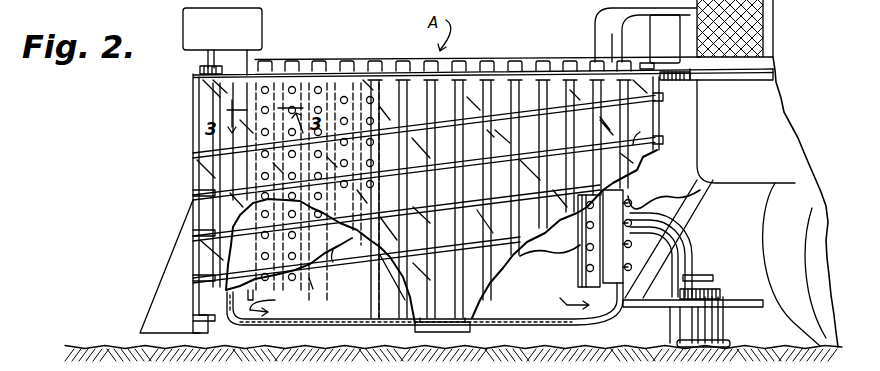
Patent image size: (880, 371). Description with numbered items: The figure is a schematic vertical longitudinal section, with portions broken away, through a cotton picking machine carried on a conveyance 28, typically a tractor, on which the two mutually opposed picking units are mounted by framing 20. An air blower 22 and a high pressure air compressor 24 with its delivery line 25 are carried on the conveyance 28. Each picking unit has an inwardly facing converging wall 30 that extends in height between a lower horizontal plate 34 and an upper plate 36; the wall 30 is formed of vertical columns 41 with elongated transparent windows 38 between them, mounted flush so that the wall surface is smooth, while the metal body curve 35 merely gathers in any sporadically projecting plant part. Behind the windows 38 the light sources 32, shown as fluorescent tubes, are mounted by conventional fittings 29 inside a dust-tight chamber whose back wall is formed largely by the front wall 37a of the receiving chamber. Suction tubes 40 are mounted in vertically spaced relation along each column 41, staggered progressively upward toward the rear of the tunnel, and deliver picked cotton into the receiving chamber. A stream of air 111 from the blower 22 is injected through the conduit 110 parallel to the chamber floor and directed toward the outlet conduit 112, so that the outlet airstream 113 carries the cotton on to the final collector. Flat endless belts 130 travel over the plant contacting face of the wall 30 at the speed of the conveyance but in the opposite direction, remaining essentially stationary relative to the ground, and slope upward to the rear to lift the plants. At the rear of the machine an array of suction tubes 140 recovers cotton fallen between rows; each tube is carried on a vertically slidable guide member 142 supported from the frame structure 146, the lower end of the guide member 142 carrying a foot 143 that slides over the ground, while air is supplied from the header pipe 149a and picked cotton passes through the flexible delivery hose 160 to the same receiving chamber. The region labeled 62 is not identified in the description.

The framing 20 is at (205, 70).
The air blower 22 is at (230, 40).
The high pressure air compressor 24 is at (674, 44).
The delivery line 25 is at (462, 62).
The conveyance 28 is at (787, 131).
The fittings 29 is at (357, 77).
The converging wall 30 is at (472, 199).
The light source 32 is at (390, 95).
The lower horizontal plate 34 is at (437, 333).
The metal body curve 35 is at (182, 262).
The upper plate 36 is at (212, 82).
The front wall of receiving chamber 37a is at (323, 291).
The window 38 is at (290, 80).
The suction tube 40 is at (256, 160).
The column 41 is at (333, 252).
The plate 62 is at (389, 308).
The conduit 110 is at (225, 321).
The stream of air 111 is at (276, 303).
The outlet conduit 112 is at (608, 193).
The outlet airstream 113 is at (561, 299).
The flat endless belt 130 is at (645, 132).
The suction tube 140 is at (661, 330).
The guide member 142 is at (723, 324).
The foot 143 is at (683, 348).
The frame structure 146 is at (742, 300).
The header pipe 149a is at (713, 276).
The flexible delivery hose 160 is at (693, 238).